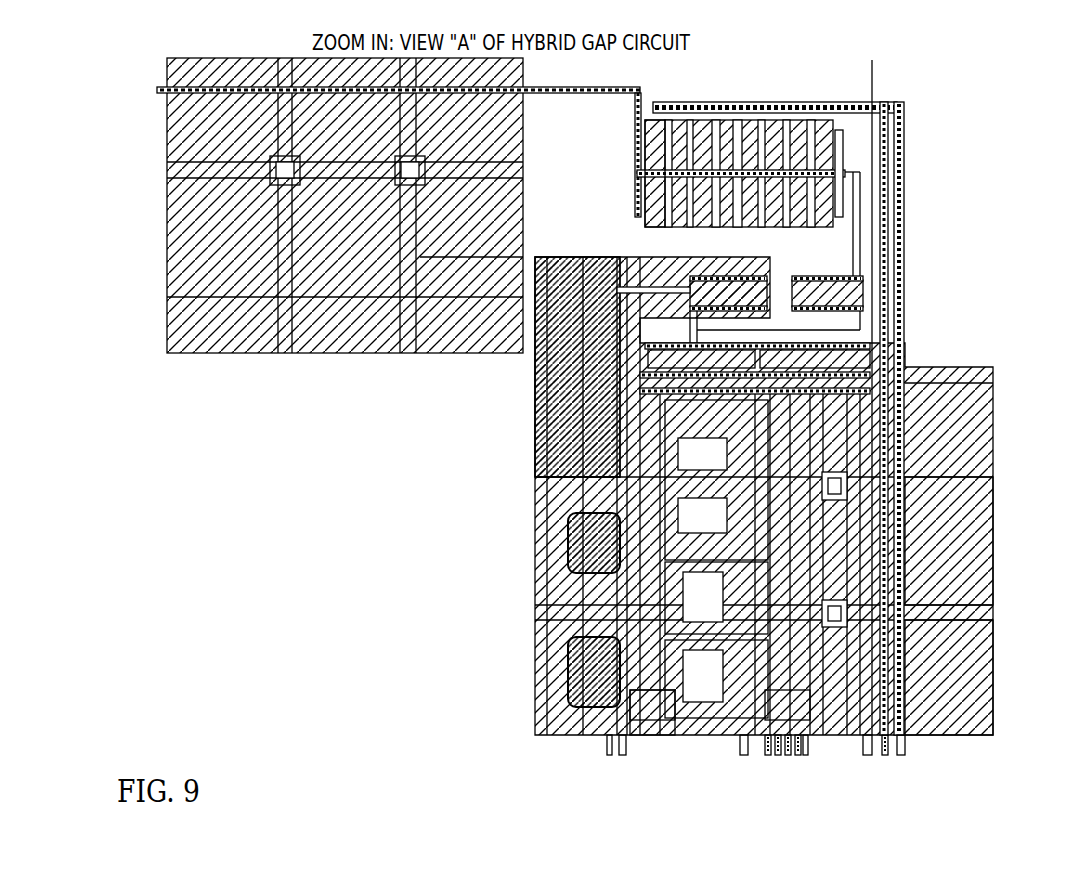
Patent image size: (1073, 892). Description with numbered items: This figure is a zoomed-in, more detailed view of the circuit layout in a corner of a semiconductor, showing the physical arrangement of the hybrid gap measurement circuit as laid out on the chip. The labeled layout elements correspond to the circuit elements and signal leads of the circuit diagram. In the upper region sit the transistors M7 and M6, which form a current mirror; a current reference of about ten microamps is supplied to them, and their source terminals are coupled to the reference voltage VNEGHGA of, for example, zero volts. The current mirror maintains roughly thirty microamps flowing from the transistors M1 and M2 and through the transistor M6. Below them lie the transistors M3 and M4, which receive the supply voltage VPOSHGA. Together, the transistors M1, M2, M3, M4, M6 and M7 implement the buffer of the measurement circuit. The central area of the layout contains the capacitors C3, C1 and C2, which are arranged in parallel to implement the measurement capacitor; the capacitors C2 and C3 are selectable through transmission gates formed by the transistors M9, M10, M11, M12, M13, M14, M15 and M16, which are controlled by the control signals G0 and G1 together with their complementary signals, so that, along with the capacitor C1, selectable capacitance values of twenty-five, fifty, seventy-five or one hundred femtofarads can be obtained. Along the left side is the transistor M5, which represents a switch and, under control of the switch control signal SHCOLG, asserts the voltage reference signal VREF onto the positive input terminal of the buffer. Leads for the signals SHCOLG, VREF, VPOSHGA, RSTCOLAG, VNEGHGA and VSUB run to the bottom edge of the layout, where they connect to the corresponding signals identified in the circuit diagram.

The transistor M7 is at (688, 92).
The transistor M6 is at (843, 92).
The transistor M1 is at (692, 293).
The transistor M2 is at (827, 293).
The transistor M3 is at (701, 359).
The transistor M4 is at (815, 359).
The transistor M13 is at (905, 418).
The transistor M14 is at (905, 538).
The transistor M9 is at (900, 640).
The transistor M10 is at (775, 693).
The transistor M15 is at (545, 427).
The transistor M16 is at (566, 540).
The transistor M12 is at (650, 634).
The transistor M5 is at (600, 714).
The transistor M11 is at (660, 738).
The control signal G1 is at (700, 548).
The control signal G0 is at (680, 607).
The capacitor C3 is at (716, 480).
The capacitor C1 is at (716, 598).
The capacitor C2 is at (716, 679).
The switch control signal SHCOLG is at (608, 758).
The voltage reference signal VREF is at (623, 758).
The supply voltage VPOSHGA is at (743, 758).
The signal lead RSTCOLAG is at (774, 760).
The reference voltage VNEGHGA is at (887, 760).
The substrate voltage pin VSUB is at (903, 760).